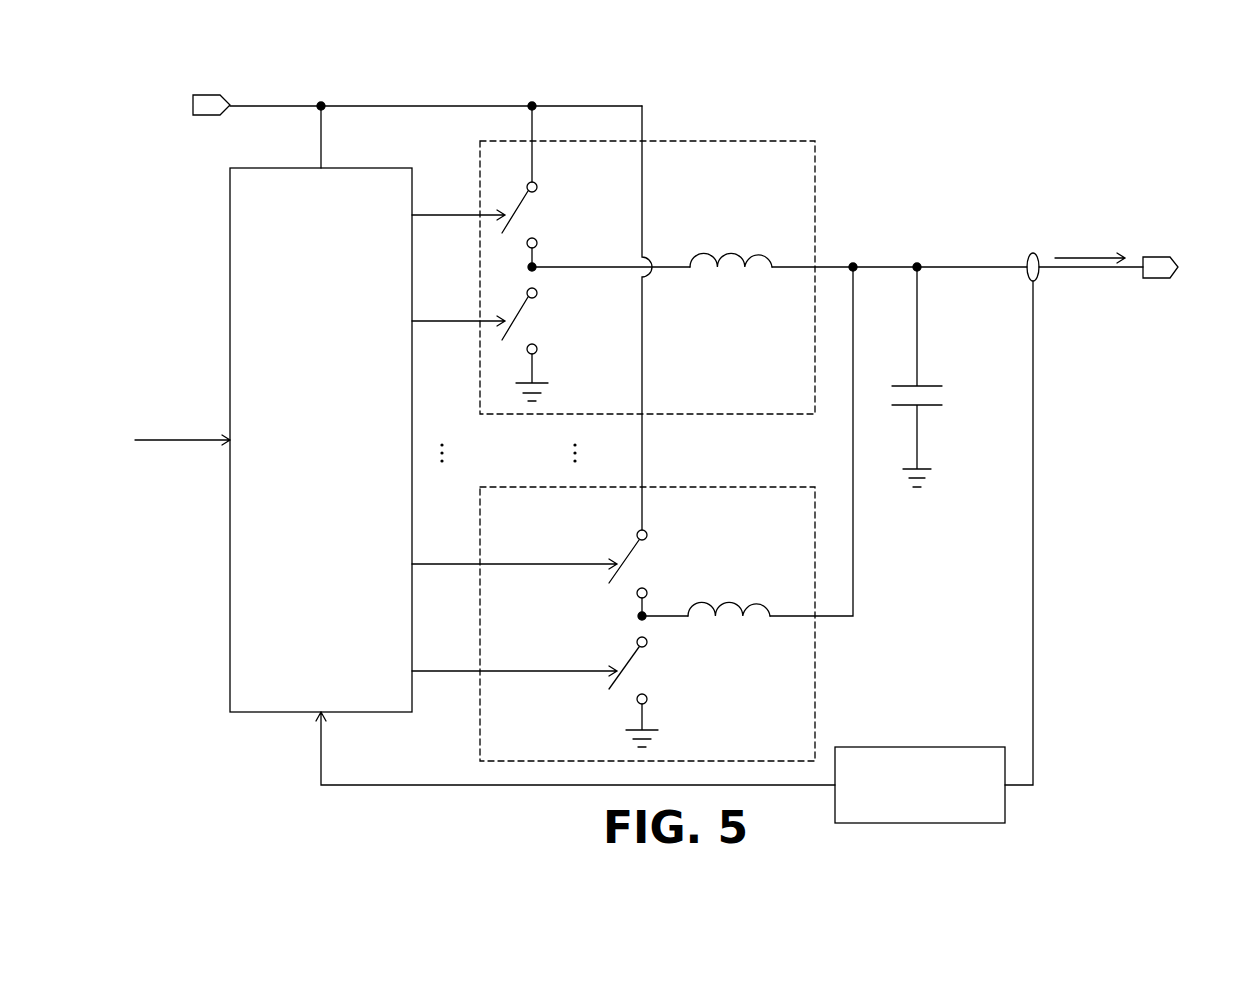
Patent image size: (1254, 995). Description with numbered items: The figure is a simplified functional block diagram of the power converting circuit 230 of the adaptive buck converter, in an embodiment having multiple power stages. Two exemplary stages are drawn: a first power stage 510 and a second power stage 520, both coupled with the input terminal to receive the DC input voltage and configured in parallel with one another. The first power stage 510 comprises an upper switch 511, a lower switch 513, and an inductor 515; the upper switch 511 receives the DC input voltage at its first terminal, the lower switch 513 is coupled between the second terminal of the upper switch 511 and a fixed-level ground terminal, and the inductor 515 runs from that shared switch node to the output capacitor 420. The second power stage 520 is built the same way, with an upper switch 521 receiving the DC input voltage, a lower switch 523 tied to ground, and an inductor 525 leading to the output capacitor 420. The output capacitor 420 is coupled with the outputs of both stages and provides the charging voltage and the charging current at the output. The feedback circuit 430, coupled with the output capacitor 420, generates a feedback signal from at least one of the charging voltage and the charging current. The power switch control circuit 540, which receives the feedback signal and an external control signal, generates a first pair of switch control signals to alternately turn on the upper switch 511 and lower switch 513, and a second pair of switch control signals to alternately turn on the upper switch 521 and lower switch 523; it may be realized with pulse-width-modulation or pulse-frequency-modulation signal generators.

The power converting circuit 230 is at (1097, 141).
The power switch control circuit 540 is at (230, 307).
The first power stage 510 is at (720, 141).
The upper switch 511 is at (532, 215).
The lower switch 513 is at (533, 321).
The inductor 515 is at (732, 247).
The second power stage 520 is at (720, 487).
The upper switch 521 is at (643, 565).
The lower switch 523 is at (643, 670).
The inductor 525 is at (728, 597).
The output capacitor 420 is at (935, 395).
The feedback circuit 430 is at (920, 747).